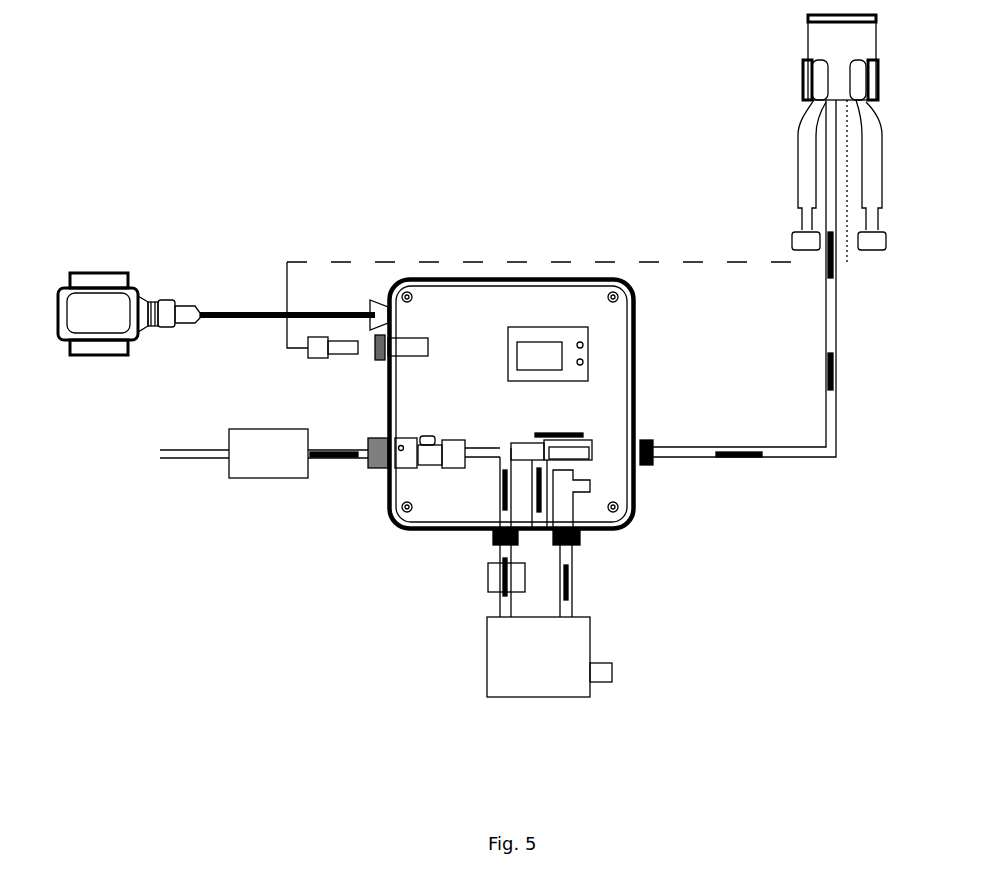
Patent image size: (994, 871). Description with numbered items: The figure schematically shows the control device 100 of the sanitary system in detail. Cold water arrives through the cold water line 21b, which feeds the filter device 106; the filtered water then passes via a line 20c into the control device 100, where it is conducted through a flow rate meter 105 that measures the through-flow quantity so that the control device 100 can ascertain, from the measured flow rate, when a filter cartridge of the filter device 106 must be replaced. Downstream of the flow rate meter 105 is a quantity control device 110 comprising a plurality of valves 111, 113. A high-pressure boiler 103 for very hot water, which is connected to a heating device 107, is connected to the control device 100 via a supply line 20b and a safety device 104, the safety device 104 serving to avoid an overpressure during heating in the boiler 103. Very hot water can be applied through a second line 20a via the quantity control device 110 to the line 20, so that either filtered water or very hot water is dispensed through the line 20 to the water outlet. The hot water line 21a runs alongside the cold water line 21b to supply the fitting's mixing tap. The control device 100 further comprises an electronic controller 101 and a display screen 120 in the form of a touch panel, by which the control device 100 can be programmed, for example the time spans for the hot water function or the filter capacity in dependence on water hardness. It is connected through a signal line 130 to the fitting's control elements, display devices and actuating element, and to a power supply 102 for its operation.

The control device 100 is at (520, 280).
The electronic controller 101 is at (415, 338).
The power supply 102 is at (218, 310).
The high-pressure boiler 103 is at (590, 636).
The safety device 104 is at (488, 578).
The flow rate meter 105 is at (447, 470).
The filter device 106 is at (268, 478).
The heating device 107 is at (612, 672).
The quantity control device 110 is at (594, 436).
The valve 111 is at (524, 436).
The valve 113 is at (575, 488).
The display screen 120 is at (583, 340).
The signal line 130 is at (330, 262).
The line 20 is at (838, 425).
The second line 20a is at (574, 553).
The supply line 20b is at (500, 598).
The line 20c is at (341, 440).
The hot water line 21a is at (875, 170).
The cold water line 21b is at (798, 158).